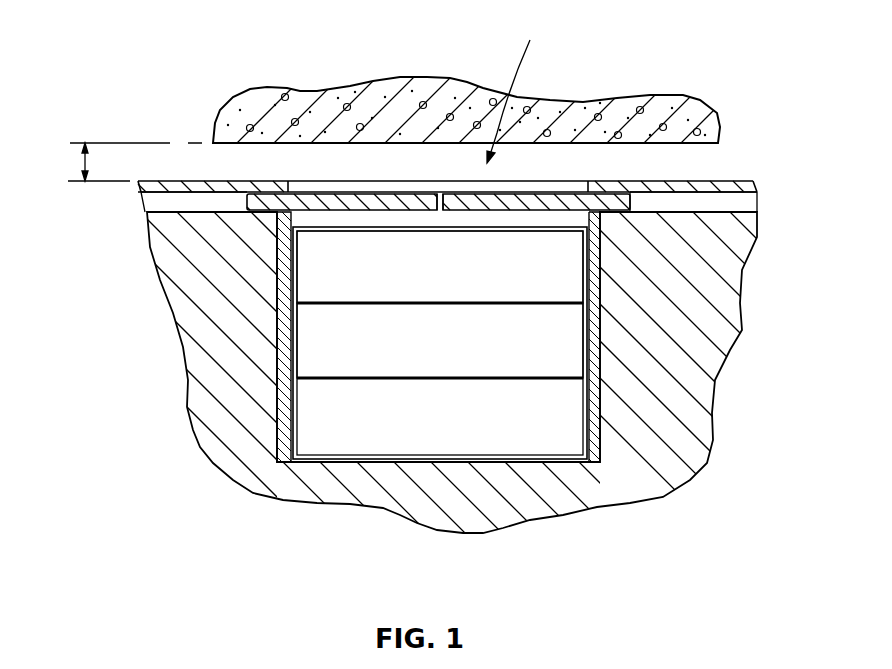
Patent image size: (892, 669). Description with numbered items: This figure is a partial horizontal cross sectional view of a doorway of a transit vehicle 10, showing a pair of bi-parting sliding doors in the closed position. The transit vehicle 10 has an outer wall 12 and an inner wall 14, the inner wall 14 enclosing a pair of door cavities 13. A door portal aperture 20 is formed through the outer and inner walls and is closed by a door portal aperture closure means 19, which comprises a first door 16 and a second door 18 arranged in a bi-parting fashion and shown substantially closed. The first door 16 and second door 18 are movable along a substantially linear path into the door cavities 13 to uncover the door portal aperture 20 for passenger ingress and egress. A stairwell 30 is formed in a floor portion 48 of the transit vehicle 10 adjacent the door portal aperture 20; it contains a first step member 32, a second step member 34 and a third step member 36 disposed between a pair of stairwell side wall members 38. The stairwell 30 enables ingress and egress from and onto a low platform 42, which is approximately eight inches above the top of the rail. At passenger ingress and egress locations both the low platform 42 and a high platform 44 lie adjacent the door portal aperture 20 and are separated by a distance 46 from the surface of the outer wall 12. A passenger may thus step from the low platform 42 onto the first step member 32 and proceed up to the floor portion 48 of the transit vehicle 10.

The transit vehicle 10 is at (163, 431).
The outer wall 12 is at (175, 180).
The door cavities 13 is at (160, 201).
The inner wall 14 is at (202, 214).
The first door 16 is at (410, 200).
The second door 18 is at (518, 200).
The door portal aperture closure means 19 is at (521, 85).
The door portal aperture 20 is at (365, 186).
The stairwell 30 is at (630, 394).
The first step member 32 is at (307, 245).
The second step member 34 is at (317, 341).
The third step member 36 is at (367, 445).
The stairwell side wall members 38 is at (273, 437).
The low platform 42 is at (367, 100).
The high platform 44 is at (466, 73).
The distance 46 is at (77, 163).
The floor portion 48 is at (463, 509).